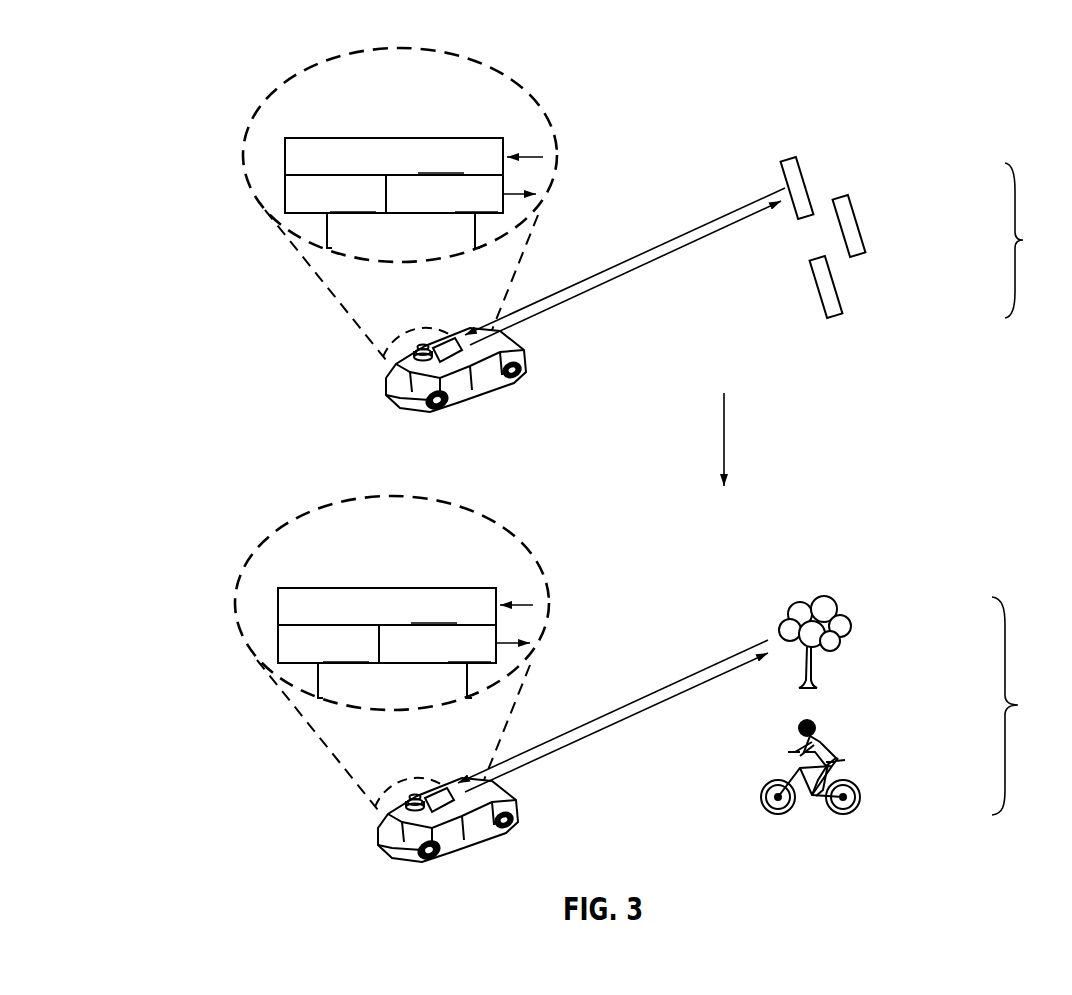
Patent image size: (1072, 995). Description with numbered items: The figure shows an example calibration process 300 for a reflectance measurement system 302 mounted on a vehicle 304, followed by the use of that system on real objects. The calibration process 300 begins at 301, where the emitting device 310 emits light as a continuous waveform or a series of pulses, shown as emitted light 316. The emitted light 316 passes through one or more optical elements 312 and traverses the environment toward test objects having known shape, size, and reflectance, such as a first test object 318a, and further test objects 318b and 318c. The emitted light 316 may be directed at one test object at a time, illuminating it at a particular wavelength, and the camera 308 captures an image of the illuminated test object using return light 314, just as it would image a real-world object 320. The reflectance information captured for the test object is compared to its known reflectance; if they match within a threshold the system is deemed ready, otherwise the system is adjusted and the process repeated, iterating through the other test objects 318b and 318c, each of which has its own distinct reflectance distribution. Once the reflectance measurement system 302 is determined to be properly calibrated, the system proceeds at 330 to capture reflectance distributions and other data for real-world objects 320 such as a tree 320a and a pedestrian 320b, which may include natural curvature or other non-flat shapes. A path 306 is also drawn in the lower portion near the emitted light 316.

The calibration process 300 is at (287, 38).
The calibration start 301 is at (227, 163).
The reflectance measurement system 302 is at (443, 349).
The vehicle 304 is at (393, 388).
The field of view / light path to objects 306 is at (648, 690).
The camera 308 is at (377, 139).
The emitting device 310 is at (334, 419).
The optical elements 312 is at (439, 422).
The return light 314 is at (523, 156).
The emitted light 316 is at (528, 192).
The first test object 318a is at (810, 179).
The test object 318b is at (860, 221).
The test object 318c is at (834, 281).
The real-world objects 320 is at (1031, 706).
The tree 320a is at (866, 625).
The pedestrian 320b is at (866, 764).
The real-world capture stage 330 is at (273, 517).